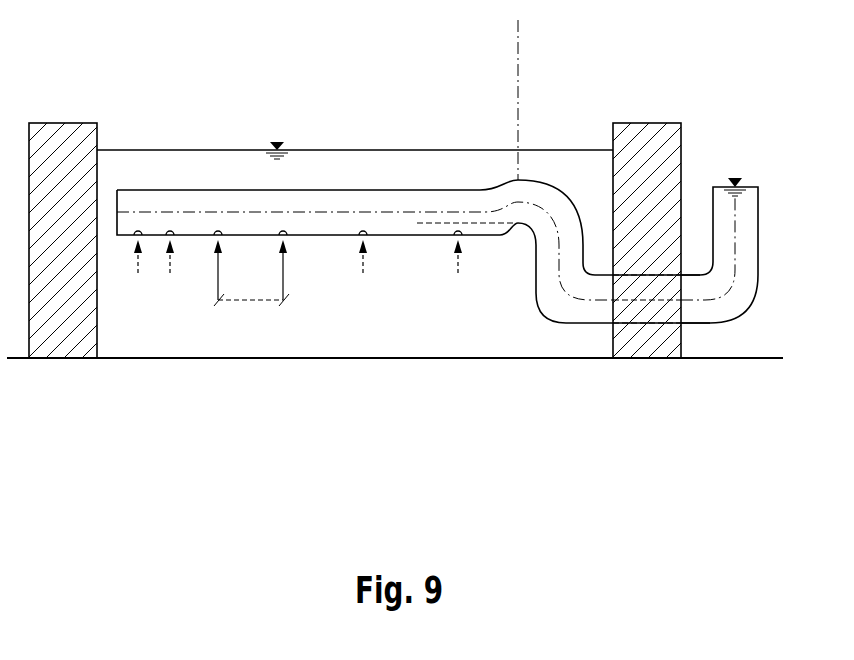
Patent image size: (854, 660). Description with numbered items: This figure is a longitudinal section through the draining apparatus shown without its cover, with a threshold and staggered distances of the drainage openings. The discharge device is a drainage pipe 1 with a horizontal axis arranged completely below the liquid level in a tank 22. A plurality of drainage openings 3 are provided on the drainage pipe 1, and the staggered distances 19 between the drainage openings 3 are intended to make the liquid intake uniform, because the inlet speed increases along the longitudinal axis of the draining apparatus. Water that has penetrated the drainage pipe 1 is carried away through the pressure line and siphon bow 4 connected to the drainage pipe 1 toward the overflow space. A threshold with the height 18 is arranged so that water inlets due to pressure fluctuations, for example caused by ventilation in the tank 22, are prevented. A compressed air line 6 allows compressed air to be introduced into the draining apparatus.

The drainage pipe 1 is at (227, 190).
The drainage openings 3 is at (143, 241).
The pressure line and siphon bow 4 is at (536, 277).
The compressed air line 6 is at (518, 70).
The height of threshold 18 is at (418, 234).
The staggered distances 19 is at (250, 307).
The tank 22 is at (445, 331).